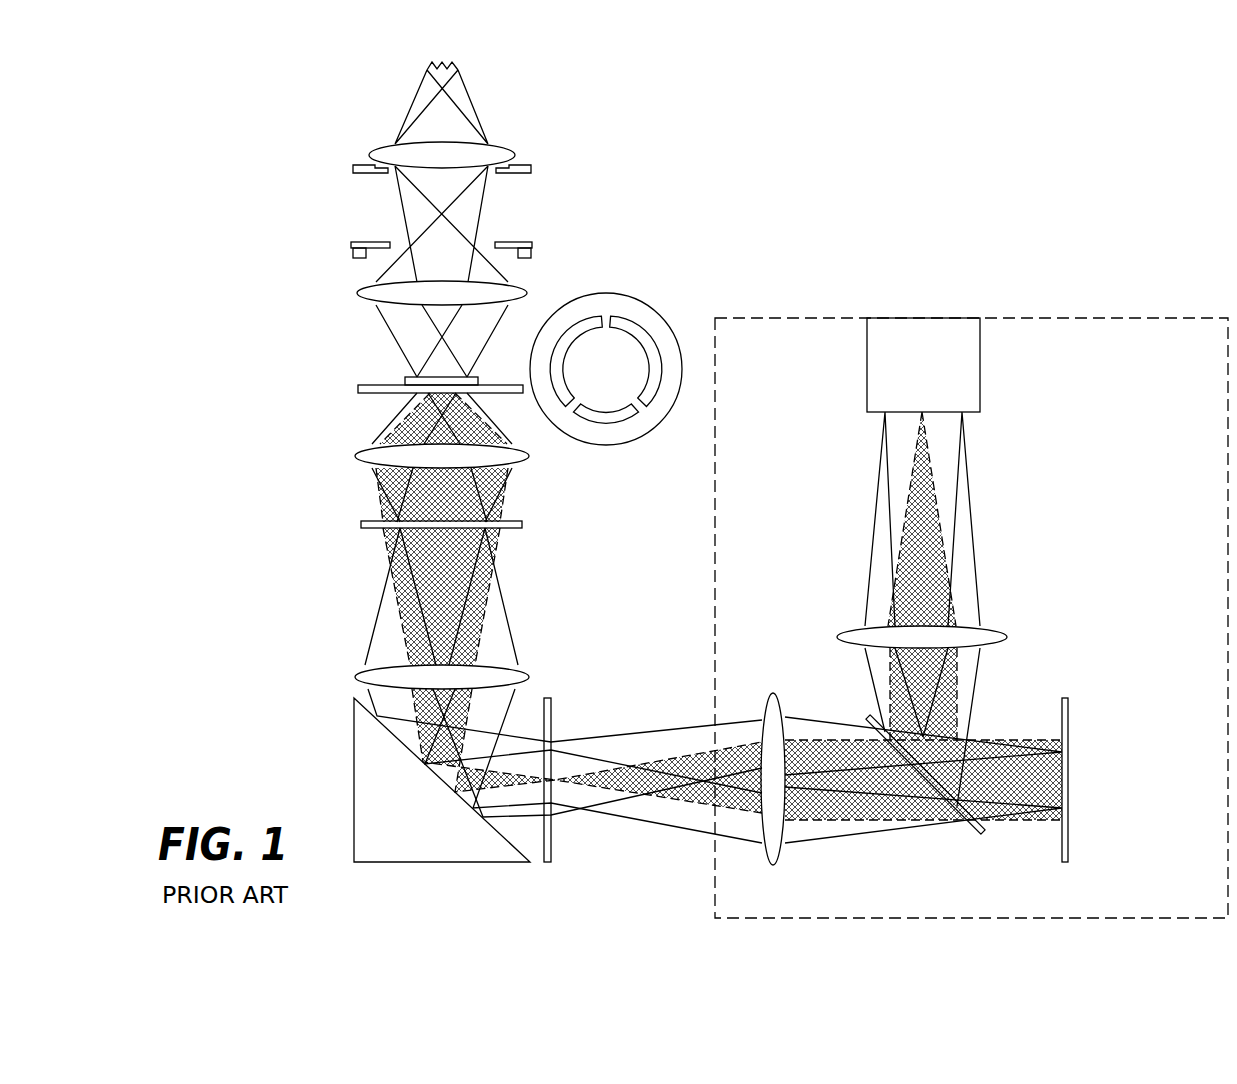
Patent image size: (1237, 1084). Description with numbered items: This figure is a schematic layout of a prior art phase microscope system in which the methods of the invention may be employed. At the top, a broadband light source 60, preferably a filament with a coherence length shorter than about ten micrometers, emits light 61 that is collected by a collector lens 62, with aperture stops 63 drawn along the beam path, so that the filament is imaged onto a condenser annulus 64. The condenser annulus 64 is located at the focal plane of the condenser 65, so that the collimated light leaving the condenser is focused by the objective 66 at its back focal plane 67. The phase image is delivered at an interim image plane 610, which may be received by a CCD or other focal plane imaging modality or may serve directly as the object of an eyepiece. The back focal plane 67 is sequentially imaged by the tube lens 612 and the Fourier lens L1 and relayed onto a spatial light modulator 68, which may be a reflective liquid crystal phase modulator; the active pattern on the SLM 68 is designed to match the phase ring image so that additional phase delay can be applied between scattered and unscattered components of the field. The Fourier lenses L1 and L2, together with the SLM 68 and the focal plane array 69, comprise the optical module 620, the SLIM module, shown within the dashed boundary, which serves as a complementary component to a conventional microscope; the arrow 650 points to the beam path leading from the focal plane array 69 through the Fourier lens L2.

The broadband light source 60 is at (447, 83).
The light 61 is at (503, 143).
The collector lens 62 is at (528, 167).
The aperture stop 63 is at (352, 247).
The condenser annulus 64 is at (533, 245).
The condenser 65 is at (357, 293).
The objective 66 is at (357, 455).
The back focal plane 67 is at (361, 524).
The spatial light modulator 68 is at (1068, 700).
The focal plane array 69 is at (938, 376).
The tube lens 612 is at (355, 677).
The interim image plane 610 is at (552, 876).
The optical module 620 is at (1181, 372).
The illumination beam 650 is at (845, 421).
The Fourier lens L1 is at (778, 857).
The Fourier lens L2 is at (1007, 637).